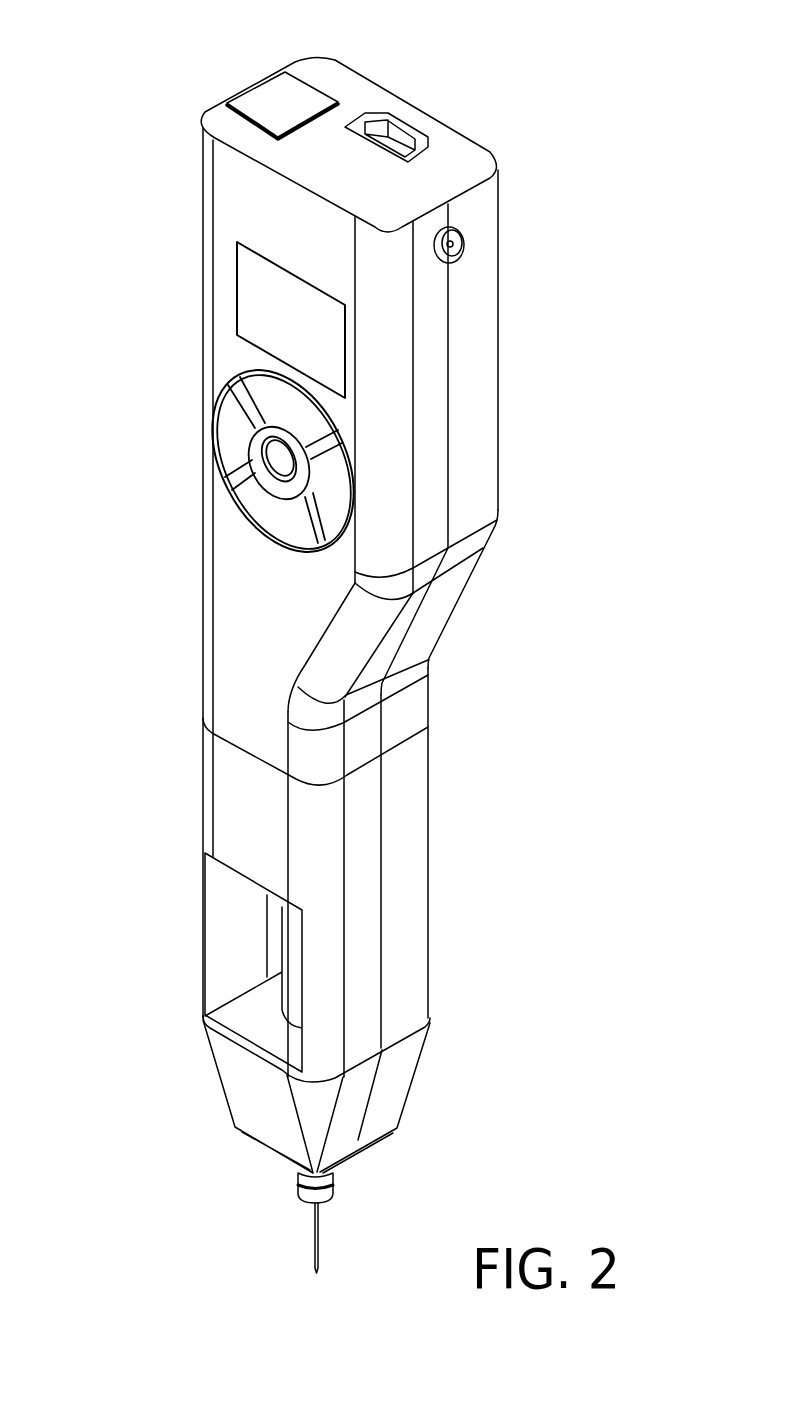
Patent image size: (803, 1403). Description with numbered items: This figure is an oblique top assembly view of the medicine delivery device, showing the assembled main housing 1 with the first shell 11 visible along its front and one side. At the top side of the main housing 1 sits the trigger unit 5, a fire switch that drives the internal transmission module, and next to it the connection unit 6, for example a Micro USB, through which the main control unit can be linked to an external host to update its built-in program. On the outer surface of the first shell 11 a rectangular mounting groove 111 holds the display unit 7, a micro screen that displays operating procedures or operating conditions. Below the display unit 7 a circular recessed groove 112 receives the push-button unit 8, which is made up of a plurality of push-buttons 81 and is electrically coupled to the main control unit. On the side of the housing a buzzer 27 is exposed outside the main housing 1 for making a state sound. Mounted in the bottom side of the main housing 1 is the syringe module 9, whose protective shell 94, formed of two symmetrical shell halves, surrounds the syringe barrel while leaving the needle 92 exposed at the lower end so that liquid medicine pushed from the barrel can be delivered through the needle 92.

The main housing 1 is at (512, 356).
The first shell 11 is at (198, 151).
The trigger unit 5 is at (278, 108).
The connection unit 6 is at (408, 130).
The buzzer 27 is at (465, 247).
The mounting groove 111 is at (227, 282).
The display unit 7 is at (257, 302).
The recessed groove 112 is at (225, 378).
The push-button unit 8 is at (244, 474).
The push-buttons 81 is at (278, 518).
The syringe module 9 is at (333, 970).
The protective shell 94 is at (196, 825).
The needle 92 is at (282, 1198).